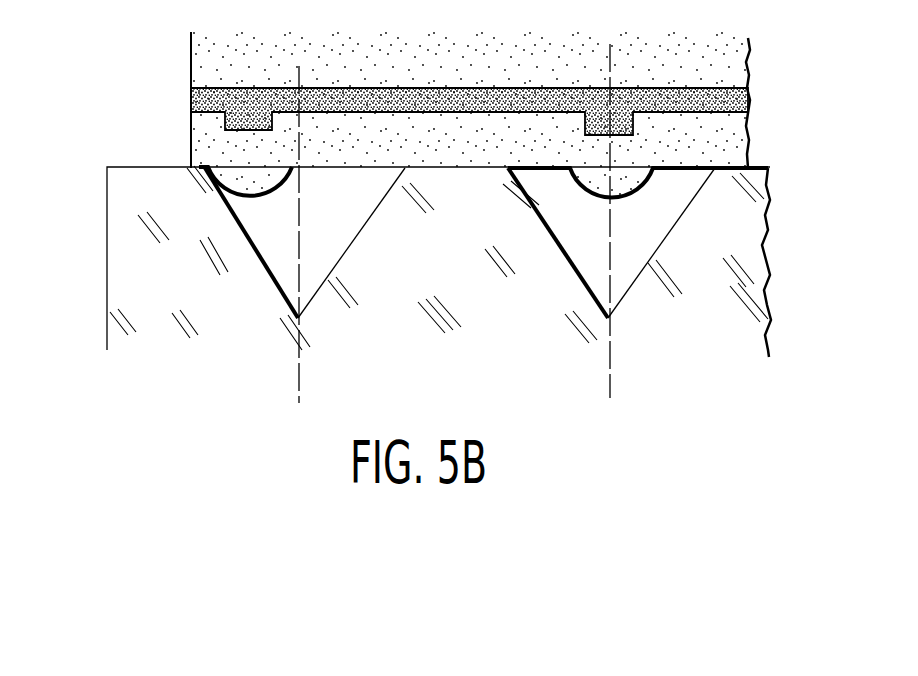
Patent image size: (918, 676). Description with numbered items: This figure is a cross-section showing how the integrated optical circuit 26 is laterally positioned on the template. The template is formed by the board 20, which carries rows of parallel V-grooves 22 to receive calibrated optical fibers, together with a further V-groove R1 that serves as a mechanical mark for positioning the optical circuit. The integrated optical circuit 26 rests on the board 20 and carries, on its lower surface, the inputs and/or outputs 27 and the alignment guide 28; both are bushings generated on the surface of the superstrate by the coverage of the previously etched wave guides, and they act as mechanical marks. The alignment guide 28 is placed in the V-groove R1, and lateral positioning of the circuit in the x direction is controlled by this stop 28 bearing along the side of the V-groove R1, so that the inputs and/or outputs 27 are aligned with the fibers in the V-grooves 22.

The board 20 is at (133, 288).
The row of parallel V-grooves 22 is at (573, 264).
The integrated optical circuit 26 is at (186, 78).
The inputs and/or outputs 27 is at (638, 193).
The alignment guide 28 is at (270, 177).
The mechanical mark R1 is at (272, 266).